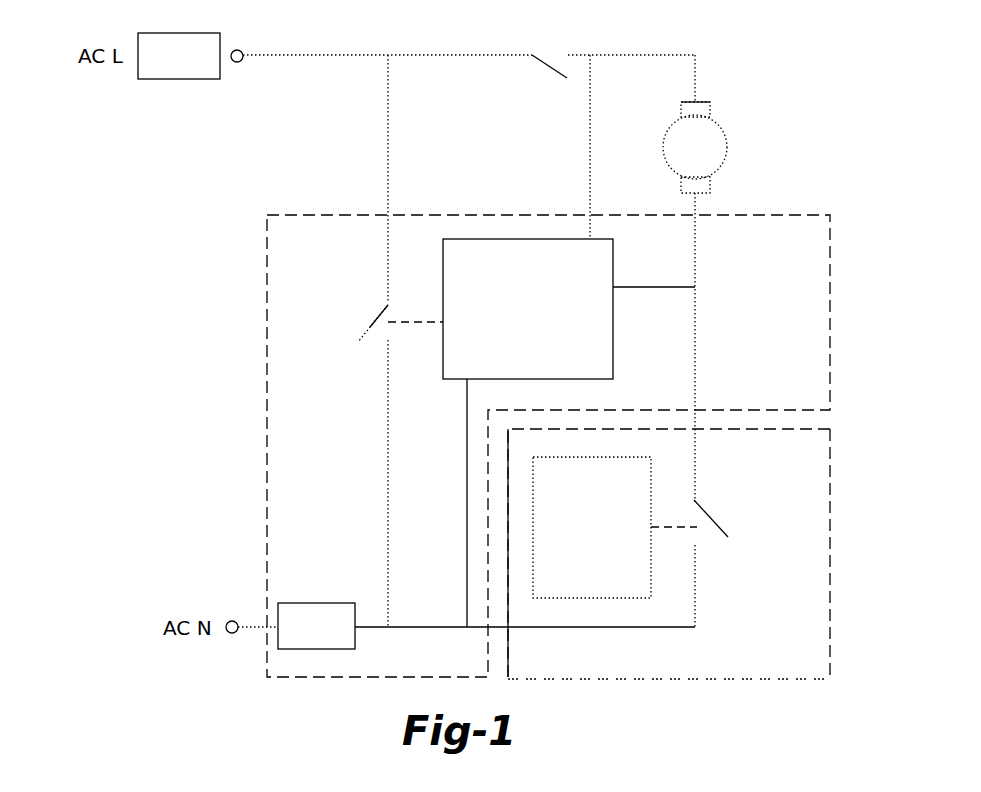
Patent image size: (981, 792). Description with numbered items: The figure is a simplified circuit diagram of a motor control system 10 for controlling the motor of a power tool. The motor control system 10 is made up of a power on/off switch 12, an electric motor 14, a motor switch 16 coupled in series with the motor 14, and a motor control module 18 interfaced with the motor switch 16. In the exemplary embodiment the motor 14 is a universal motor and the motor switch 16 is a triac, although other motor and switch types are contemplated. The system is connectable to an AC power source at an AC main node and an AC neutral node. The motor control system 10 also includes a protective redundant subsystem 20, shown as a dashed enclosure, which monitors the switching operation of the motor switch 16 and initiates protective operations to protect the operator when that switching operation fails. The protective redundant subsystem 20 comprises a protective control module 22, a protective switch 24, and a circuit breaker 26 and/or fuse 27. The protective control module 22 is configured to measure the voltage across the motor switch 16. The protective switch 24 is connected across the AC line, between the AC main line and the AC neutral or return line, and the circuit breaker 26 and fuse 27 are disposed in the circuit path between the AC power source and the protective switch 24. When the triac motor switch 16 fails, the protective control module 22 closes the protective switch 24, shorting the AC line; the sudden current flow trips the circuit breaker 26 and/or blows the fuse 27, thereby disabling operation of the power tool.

The motor control system 10 is at (228, 315).
The power on/off switch 12 is at (547, 62).
The electric motor 14 is at (727, 147).
The motor switch 16 is at (712, 515).
The motor control module 18 is at (625, 599).
The protective redundant subsystem 20 is at (461, 213).
The protective control module 22 is at (613, 368).
The protective switch 24 is at (370, 323).
The circuit breaker 26 is at (173, 80).
The fuse 27 is at (316, 603).